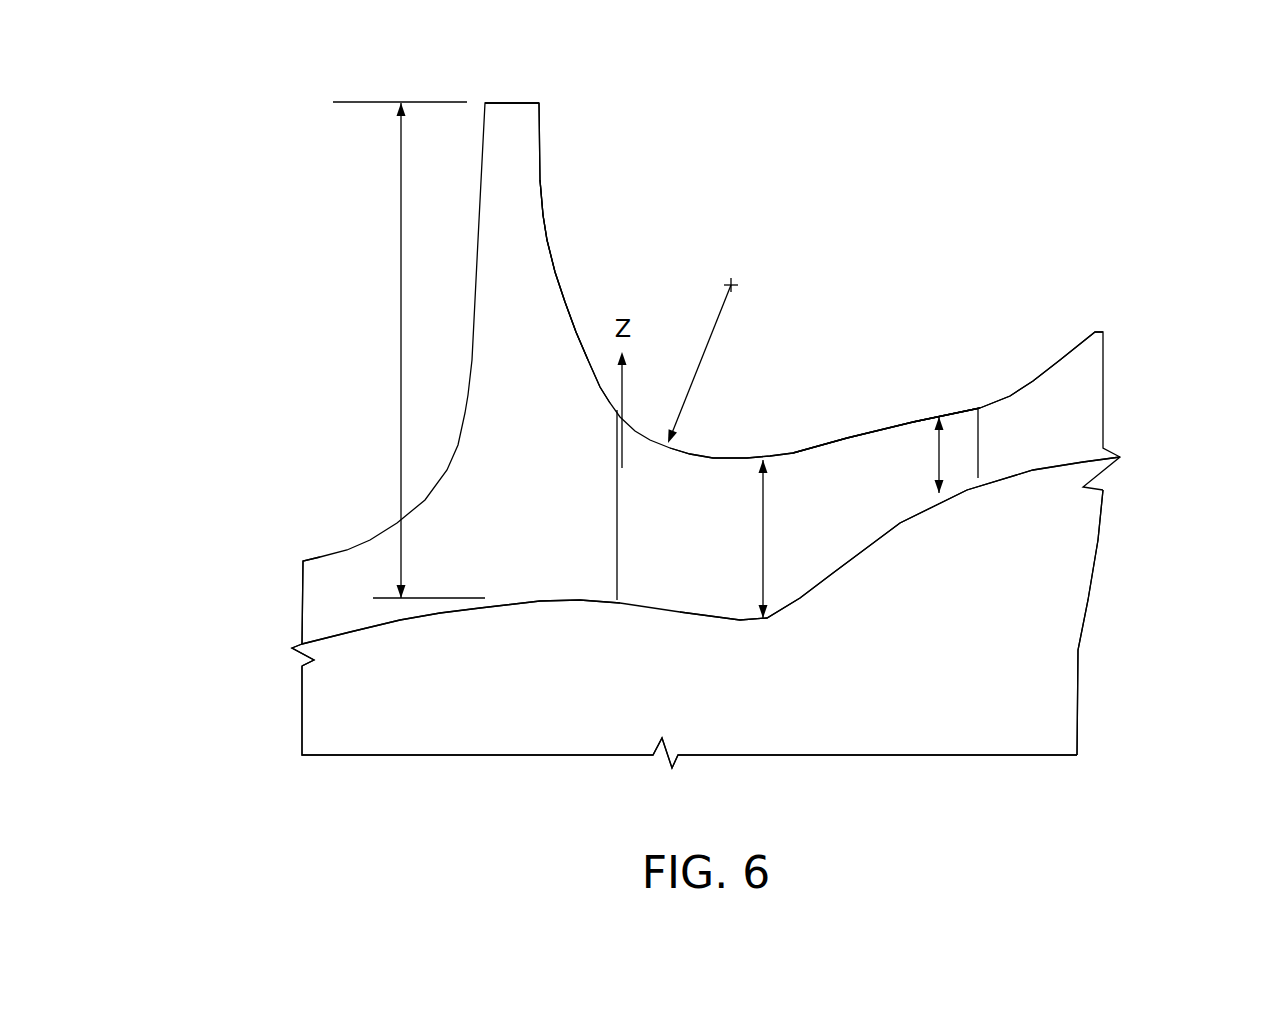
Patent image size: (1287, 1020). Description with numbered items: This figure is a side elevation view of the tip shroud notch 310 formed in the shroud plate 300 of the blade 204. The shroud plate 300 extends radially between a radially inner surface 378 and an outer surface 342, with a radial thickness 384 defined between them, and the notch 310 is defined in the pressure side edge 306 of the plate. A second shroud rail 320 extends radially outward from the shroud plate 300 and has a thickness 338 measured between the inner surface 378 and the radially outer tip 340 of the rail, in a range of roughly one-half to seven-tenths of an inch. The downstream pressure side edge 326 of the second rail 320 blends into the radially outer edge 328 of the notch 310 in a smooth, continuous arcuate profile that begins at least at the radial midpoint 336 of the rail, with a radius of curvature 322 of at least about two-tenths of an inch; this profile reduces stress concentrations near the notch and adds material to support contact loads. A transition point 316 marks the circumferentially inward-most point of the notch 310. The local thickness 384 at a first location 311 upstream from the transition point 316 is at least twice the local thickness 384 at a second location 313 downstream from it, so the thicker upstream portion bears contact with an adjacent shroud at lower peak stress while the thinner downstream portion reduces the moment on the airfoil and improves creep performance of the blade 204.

The shroud plate 300 is at (1148, 386).
The second shroud rail 320 is at (512, 102).
The radially outer tip 340 is at (527, 102).
The downstream pressure side edge 326 is at (557, 267).
The radial midpoint 336 is at (553, 300).
The thickness 338 is at (400, 360).
The radius of curvature 322 is at (707, 345).
The first location 311 is at (768, 440).
The transition point 316 is at (796, 437).
The radially outer edge 328 is at (852, 432).
The second location 313 is at (939, 398).
The outer surface 342 is at (1025, 375).
The radial thickness 384 is at (762, 537).
The pressure side edge 306 is at (335, 597).
The radially inner surface 378 is at (475, 616).
The tip shroud notch 310 is at (810, 572).
The blade 204 is at (1120, 662).